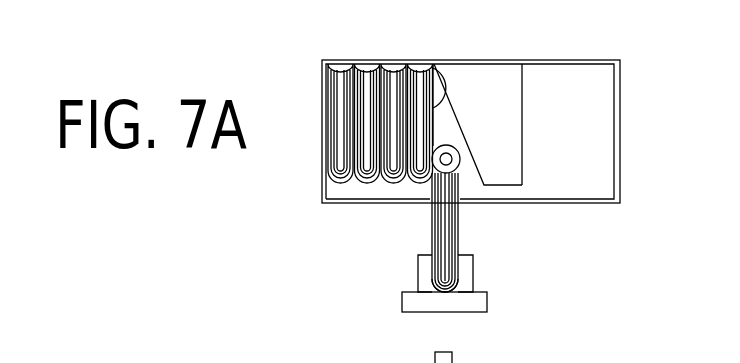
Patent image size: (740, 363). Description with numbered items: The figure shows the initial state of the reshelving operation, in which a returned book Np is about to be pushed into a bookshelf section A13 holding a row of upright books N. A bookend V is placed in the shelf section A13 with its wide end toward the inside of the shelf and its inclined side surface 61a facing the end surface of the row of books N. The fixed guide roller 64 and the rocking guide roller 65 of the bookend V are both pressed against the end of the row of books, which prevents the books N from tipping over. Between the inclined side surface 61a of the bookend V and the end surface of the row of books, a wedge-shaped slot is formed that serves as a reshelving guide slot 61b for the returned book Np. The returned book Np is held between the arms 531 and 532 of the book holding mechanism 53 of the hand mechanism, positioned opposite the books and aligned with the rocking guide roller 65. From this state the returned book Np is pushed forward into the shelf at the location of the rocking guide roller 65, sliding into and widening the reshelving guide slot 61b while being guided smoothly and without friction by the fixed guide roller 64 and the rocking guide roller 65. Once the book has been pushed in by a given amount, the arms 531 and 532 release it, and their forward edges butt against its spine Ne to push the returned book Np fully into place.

The books N is at (368, 70).
The fixed guide roller 64 is at (463, 135).
The reshelving guide slot 61b is at (443, 127).
The inclined side surface 61a is at (458, 127).
The bookend V is at (505, 158).
The shelf section A13 is at (587, 137).
The rocking guide roller 65 is at (452, 159).
The returned book Np is at (430, 238).
The arm 531 is at (418, 265).
The arm 532 is at (462, 270).
The book holding mechanism 53 is at (473, 302).
The spine portion Ne is at (443, 292).